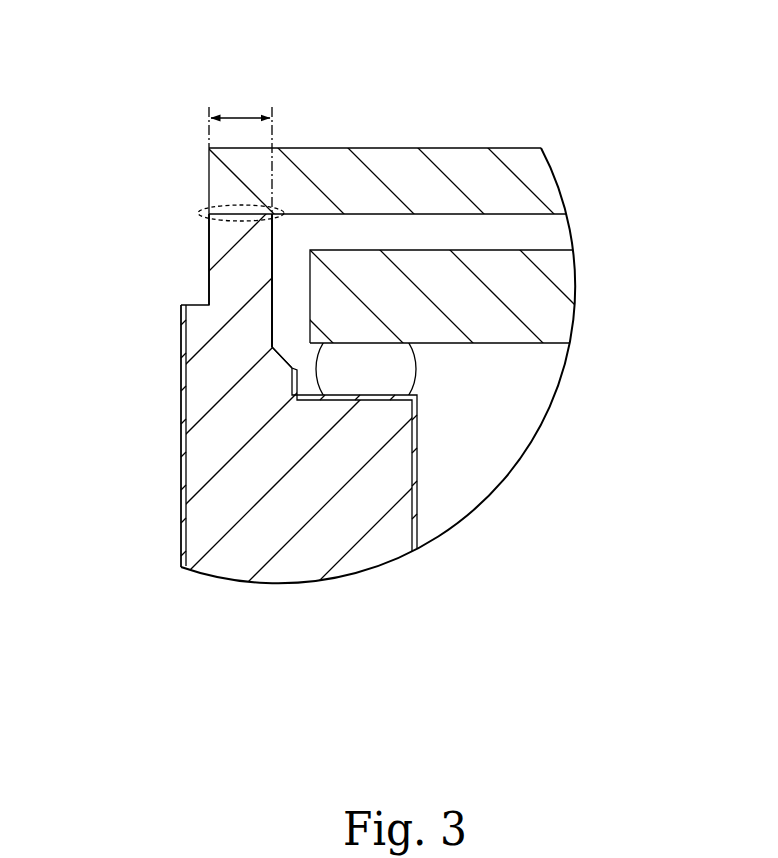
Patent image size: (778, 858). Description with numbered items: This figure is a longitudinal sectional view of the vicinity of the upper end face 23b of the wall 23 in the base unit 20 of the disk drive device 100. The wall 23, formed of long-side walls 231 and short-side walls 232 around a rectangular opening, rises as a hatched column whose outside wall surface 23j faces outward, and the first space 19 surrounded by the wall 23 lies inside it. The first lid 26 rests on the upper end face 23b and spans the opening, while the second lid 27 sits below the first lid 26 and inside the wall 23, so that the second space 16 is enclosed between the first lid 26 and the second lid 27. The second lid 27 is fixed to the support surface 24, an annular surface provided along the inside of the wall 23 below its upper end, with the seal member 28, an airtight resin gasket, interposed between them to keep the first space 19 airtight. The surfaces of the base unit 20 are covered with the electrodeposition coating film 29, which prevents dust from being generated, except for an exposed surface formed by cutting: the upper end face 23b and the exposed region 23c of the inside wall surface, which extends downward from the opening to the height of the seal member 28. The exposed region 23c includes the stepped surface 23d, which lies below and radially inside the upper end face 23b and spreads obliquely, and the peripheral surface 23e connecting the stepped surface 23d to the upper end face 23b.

The disk drive device 100 is at (126, 73).
The second space 16 is at (549, 231).
The first space 19 is at (515, 425).
The base unit 20 is at (363, 586).
The wall 23 is at (166, 460).
The upper end face 23b is at (230, 211).
The exposed region 23c is at (282, 254).
The stepped surface 23d is at (286, 358).
The peripheral surface 23e is at (277, 237).
The outside wall surface 23j is at (176, 410).
The support surface 24 is at (418, 385).
The first lid 26 is at (545, 182).
The second lid 27 is at (568, 278).
The seal member 28 is at (400, 357).
The electrodeposition coating film 29 is at (181, 508).
The long-side wall 231 is at (194, 243).
The short-side wall 232 is at (172, 280).